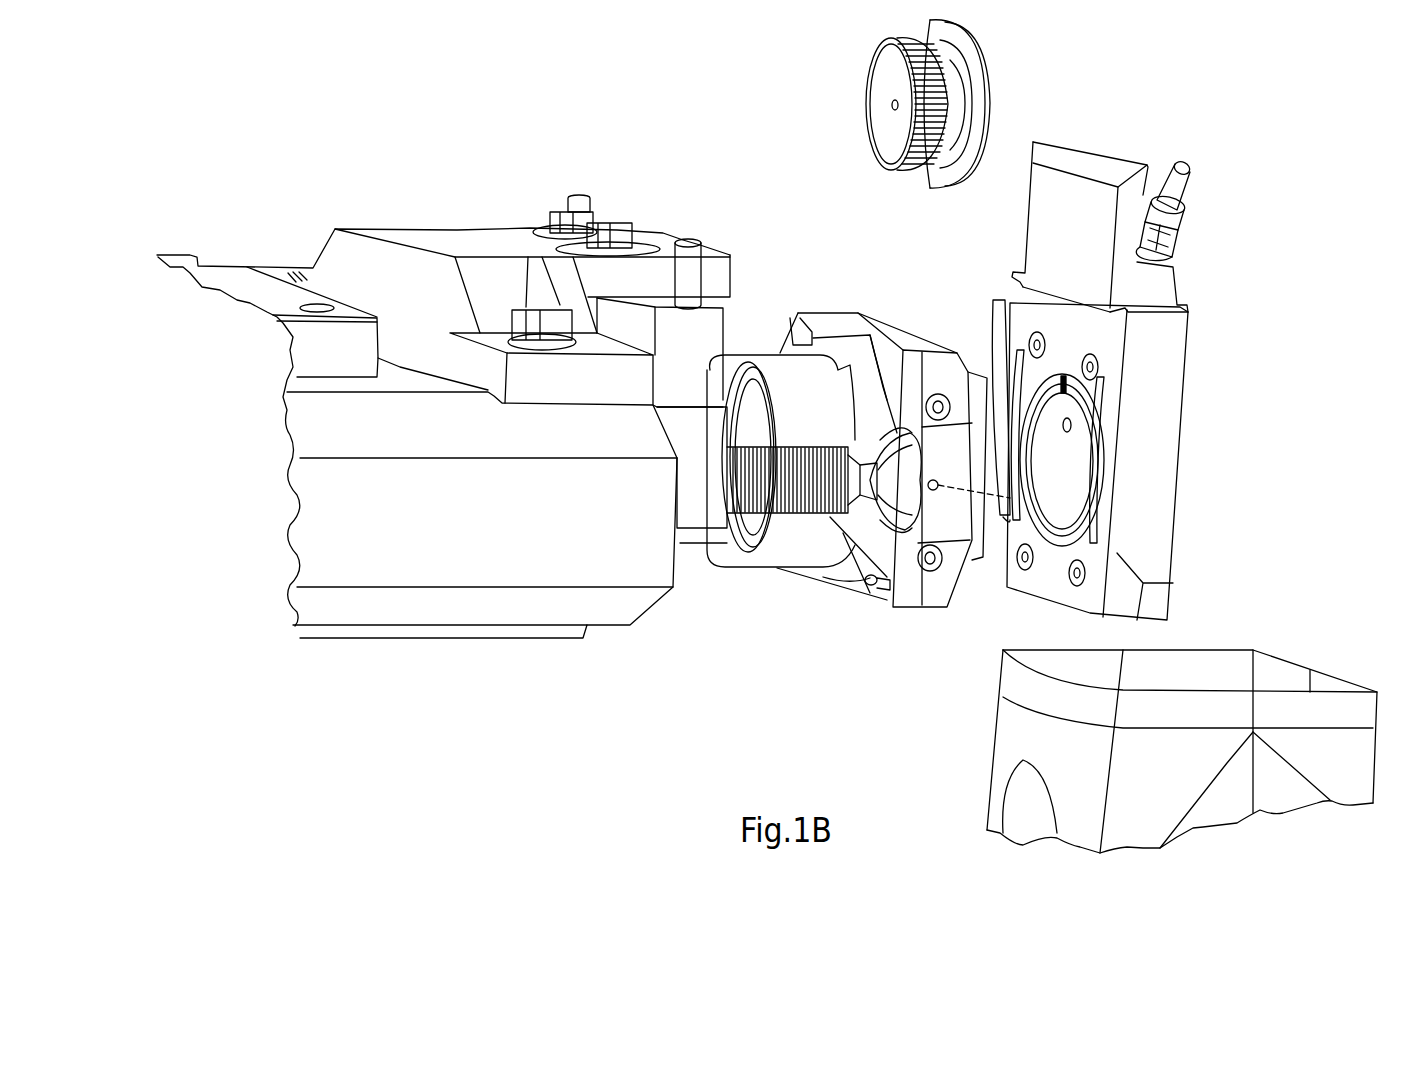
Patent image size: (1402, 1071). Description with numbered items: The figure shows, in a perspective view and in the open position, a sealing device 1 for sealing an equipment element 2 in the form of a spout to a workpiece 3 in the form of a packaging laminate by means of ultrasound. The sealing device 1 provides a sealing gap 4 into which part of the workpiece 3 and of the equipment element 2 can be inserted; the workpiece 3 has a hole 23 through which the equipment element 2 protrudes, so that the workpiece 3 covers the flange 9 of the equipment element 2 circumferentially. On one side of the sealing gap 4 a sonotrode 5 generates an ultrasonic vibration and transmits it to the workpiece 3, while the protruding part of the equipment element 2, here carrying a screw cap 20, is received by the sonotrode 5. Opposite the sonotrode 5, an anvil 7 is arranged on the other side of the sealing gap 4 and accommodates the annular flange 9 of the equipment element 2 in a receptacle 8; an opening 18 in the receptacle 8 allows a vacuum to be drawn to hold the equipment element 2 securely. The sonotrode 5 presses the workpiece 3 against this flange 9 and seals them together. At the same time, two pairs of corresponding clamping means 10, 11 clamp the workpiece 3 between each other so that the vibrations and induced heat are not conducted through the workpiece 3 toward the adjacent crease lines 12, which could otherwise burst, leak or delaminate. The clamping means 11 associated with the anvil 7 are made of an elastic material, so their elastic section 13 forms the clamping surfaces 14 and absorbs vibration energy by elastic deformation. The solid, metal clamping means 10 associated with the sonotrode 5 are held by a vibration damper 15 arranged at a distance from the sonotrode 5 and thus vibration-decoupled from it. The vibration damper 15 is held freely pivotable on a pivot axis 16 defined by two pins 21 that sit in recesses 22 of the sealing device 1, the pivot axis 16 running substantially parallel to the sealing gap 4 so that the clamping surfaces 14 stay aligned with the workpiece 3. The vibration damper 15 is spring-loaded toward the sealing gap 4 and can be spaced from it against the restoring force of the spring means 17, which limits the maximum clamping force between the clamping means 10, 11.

The sealing device 1 is at (316, 148).
The equipment element 2 is at (968, 262).
The workpiece 3 is at (1038, 612).
The sealing gap 4 is at (991, 556).
The sonotrode 5 is at (764, 375).
The anvil 7 is at (1115, 340).
The receptacle 8 is at (1068, 470).
The flange 9 is at (987, 118).
The clamping means 10 is at (965, 570).
The clamping means 11 is at (1000, 330).
The crease lines 12 is at (1228, 758).
The elastic section 13 is at (1105, 440).
The clamping surfaces 14 is at (990, 372).
The vibration damper 15 is at (836, 322).
The pivot axis 16 is at (940, 600).
The spring means 17 is at (780, 513).
The opening 18 is at (1075, 423).
The screw cap 20 is at (885, 104).
The pins 21 is at (895, 525).
The recesses 22 is at (900, 473).
The hole 23 is at (1020, 780).